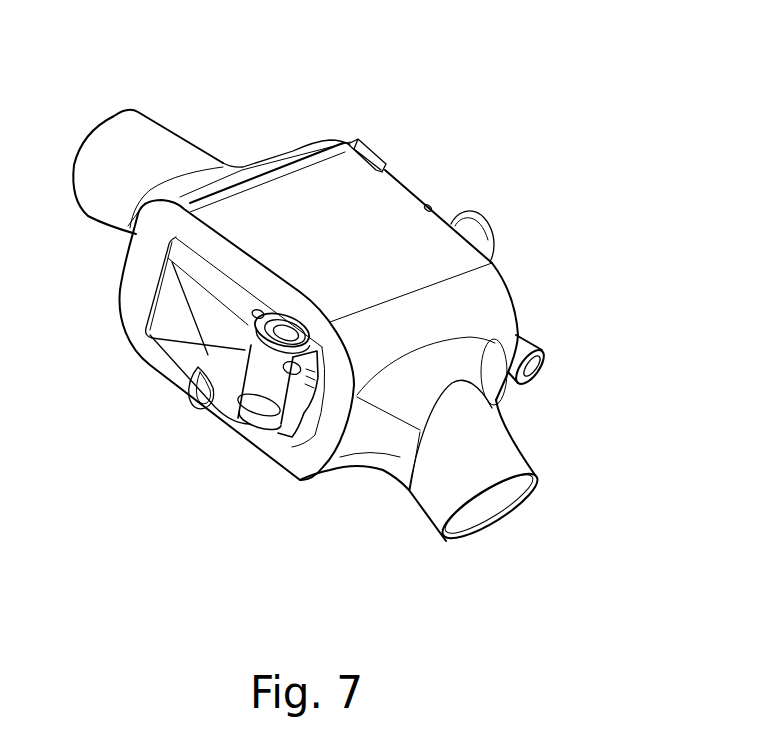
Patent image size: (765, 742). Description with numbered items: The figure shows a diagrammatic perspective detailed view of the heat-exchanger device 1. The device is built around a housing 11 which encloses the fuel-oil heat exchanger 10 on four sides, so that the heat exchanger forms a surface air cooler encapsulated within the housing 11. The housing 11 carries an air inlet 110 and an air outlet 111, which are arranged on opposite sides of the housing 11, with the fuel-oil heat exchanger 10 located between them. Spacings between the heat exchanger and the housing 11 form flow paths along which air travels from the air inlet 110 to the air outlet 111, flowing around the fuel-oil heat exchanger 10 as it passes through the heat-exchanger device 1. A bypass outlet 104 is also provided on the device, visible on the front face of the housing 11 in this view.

The heat-exchanger device 1 is at (186, 468).
The fuel-oil heat exchanger 10 is at (182, 332).
The housing 11 is at (290, 190).
The bypass outlet 104 is at (270, 312).
The air inlet 110 is at (457, 539).
The air outlet 111 is at (101, 118).